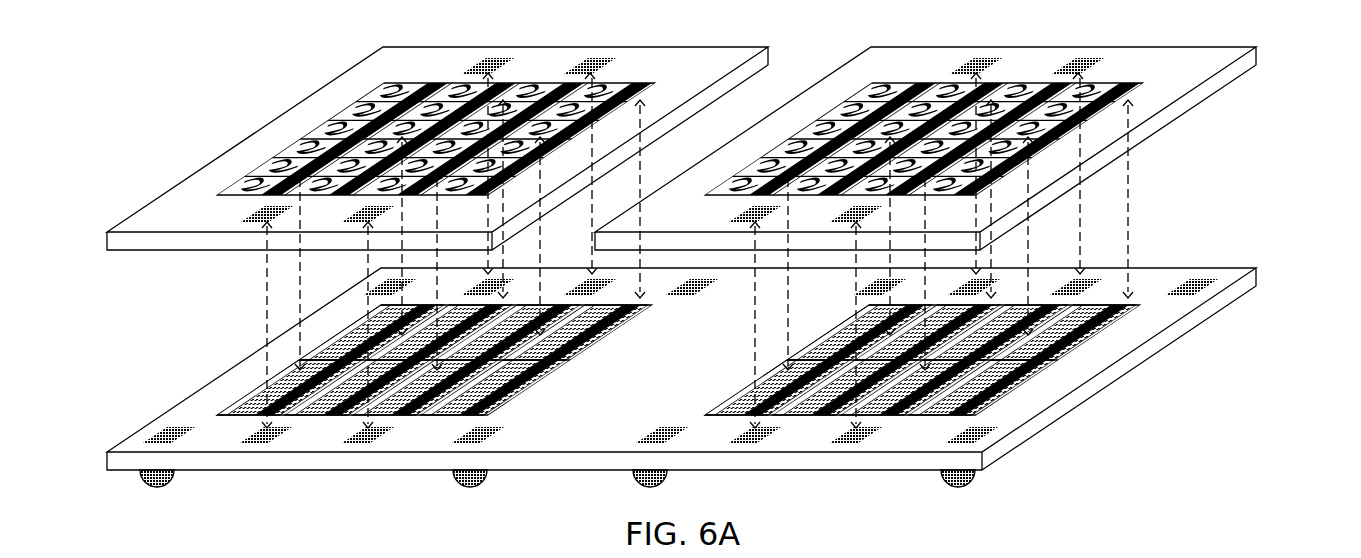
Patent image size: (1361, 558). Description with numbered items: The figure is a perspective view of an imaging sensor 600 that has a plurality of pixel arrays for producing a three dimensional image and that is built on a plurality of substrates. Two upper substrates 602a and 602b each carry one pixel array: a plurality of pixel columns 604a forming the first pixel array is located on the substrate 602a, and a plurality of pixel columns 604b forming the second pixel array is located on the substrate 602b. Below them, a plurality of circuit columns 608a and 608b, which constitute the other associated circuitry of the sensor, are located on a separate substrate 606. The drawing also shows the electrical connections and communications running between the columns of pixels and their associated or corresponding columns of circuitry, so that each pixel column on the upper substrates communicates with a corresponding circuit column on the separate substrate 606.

The imaging sensor 600 is at (1190, 187).
The substrate 602a is at (1230, 88).
The substrate 602b is at (288, 132).
The pixel columns 604a is at (1110, 82).
The pixel columns 604b is at (597, 57).
The separate substrate 606 is at (1058, 407).
The circuit columns 608a is at (1130, 318).
The circuit columns 608b is at (248, 395).